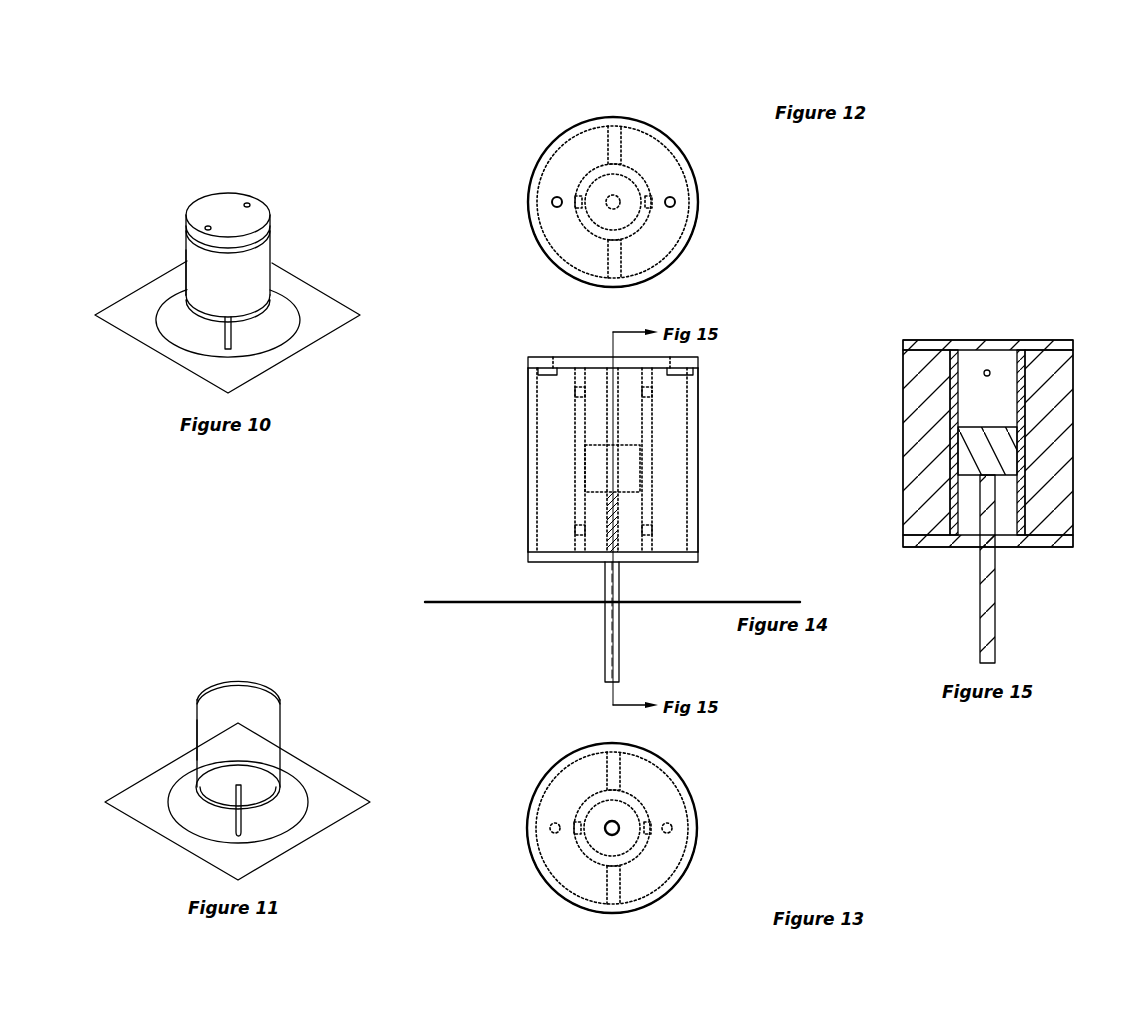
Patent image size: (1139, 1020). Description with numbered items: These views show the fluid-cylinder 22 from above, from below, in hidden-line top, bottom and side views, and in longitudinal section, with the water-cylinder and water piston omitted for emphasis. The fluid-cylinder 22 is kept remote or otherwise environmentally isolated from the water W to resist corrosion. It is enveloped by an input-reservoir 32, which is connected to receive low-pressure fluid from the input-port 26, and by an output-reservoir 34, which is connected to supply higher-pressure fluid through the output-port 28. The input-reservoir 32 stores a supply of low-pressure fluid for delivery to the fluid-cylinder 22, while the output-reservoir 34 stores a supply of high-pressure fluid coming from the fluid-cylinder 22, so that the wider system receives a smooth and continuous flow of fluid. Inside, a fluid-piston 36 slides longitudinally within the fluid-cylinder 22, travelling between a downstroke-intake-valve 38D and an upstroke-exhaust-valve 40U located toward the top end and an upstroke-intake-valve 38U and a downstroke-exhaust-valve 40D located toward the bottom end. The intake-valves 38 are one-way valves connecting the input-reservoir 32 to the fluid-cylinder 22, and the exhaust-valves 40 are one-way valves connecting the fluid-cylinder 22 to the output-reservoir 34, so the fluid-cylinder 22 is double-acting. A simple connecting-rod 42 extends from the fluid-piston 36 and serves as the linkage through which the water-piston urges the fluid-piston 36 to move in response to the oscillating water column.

In FIG. 12, the fluid-cylinder 22 is at (630, 163).
In FIG. 13, the fluid-cylinder 22 is at (642, 802).
In FIG. 14, the fluid-cylinder 22 is at (587, 378).
In FIG. 15, the fluid-cylinder 22 is at (1010, 313).
In FIG. 10, the input-port 26 is at (207, 226).
In FIG. 12, the input-port 26 is at (552, 198).
In FIG. 13, the input-port 26 is at (548, 828).
In FIG. 14, the input-port 26 is at (538, 375).
In FIG. 10, the output-port 28 is at (247, 205).
In FIG. 12, the output-port 28 is at (673, 200).
In FIG. 13, the output-port 28 is at (677, 828).
In FIG. 14, the output-port 28 is at (693, 375).
In FIG. 10, the input-reservoir 32 is at (205, 273).
In FIG. 11, the input-reservoir 32 is at (197, 722).
In FIG. 12, the input-reservoir 32 is at (580, 252).
In FIG. 13, the input-reservoir 32 is at (573, 873).
In FIG. 14, the input-reservoir 32 is at (566, 506).
In FIG. 10, the output-reservoir 34 is at (272, 250).
In FIG. 11, the output-reservoir 34 is at (280, 712).
In FIG. 12, the output-reservoir 34 is at (650, 252).
In FIG. 13, the output-reservoir 34 is at (648, 878).
In FIG. 14, the output-reservoir 34 is at (679, 506).
In FIG. 12, the fluid-piston 36 is at (593, 193).
In FIG. 13, the fluid-piston 36 is at (607, 807).
In FIG. 14, the fluid-piston 36 is at (628, 458).
In FIG. 15, the fluid-piston 36 is at (994, 425).
In FIG. 12, the intake-valves 38 is at (573, 203).
In FIG. 13, the intake-valves 38 is at (575, 827).
In FIG. 14, the downstroke-intake-valve 38D is at (575, 392).
In FIG. 14, the upstroke-intake-valve 38U is at (575, 530).
In FIG. 12, the exhaust-valves 40 is at (653, 203).
In FIG. 13, the exhaust-valves 40 is at (653, 828).
In FIG. 14, the upstroke-exhaust-valve 40U is at (652, 392).
In FIG. 15, the upstroke-exhaust-valve 40U is at (987, 365).
In FIG. 14, the downstroke-exhaust-valve 40D is at (652, 530).
In FIG. 10, the connecting-rod 42 is at (232, 335).
In FIG. 11, the connecting-rod 42 is at (234, 823).
In FIG. 12, the connecting-rod 42 is at (607, 196).
In FIG. 13, the connecting-rod 42 is at (620, 832).
In FIG. 14, the connecting-rod 42 is at (602, 646).
In FIG. 15, the connecting-rod 42 is at (1000, 595).
In FIG. 10, the water W is at (137, 323).
In FIG. 11, the water W is at (157, 808).
In FIG. 14, the water W is at (433, 595).